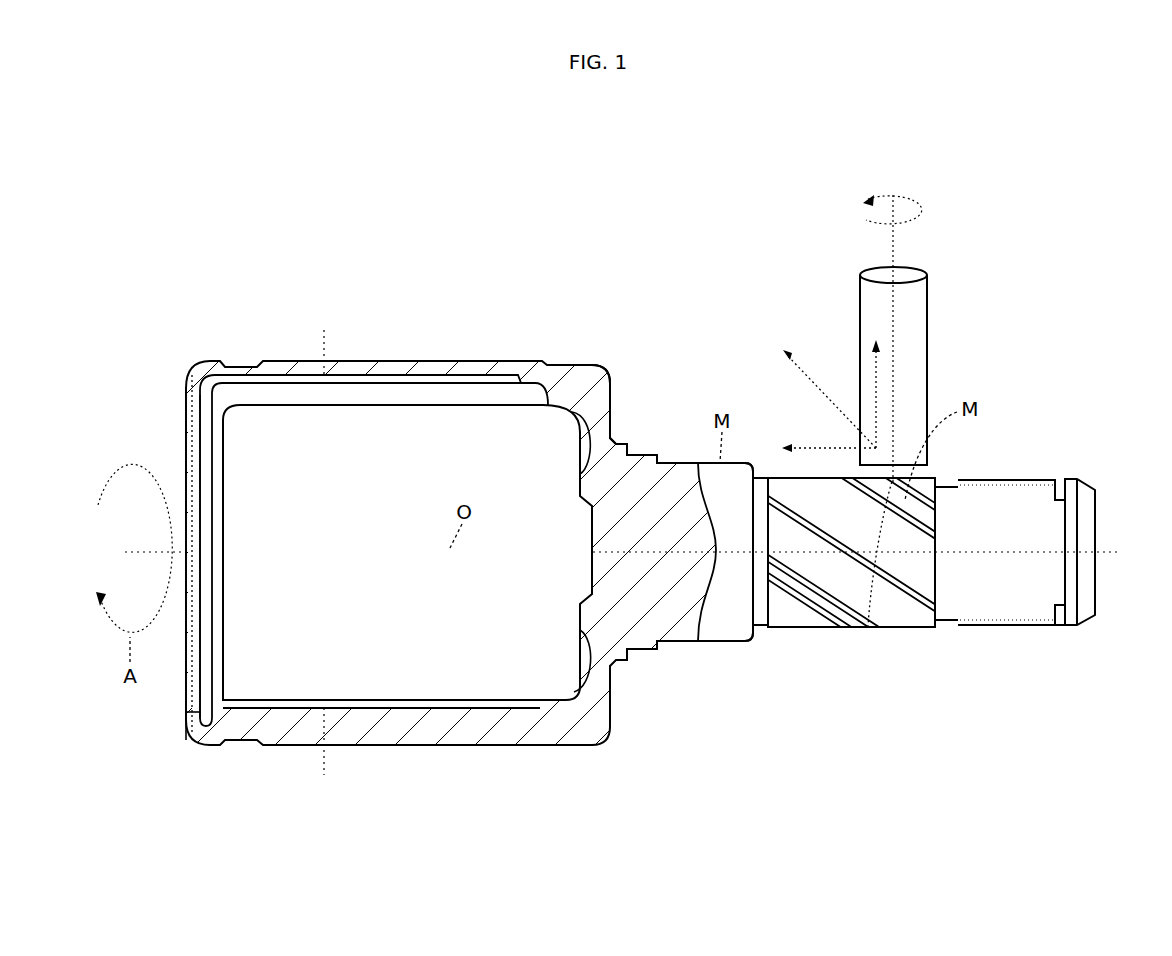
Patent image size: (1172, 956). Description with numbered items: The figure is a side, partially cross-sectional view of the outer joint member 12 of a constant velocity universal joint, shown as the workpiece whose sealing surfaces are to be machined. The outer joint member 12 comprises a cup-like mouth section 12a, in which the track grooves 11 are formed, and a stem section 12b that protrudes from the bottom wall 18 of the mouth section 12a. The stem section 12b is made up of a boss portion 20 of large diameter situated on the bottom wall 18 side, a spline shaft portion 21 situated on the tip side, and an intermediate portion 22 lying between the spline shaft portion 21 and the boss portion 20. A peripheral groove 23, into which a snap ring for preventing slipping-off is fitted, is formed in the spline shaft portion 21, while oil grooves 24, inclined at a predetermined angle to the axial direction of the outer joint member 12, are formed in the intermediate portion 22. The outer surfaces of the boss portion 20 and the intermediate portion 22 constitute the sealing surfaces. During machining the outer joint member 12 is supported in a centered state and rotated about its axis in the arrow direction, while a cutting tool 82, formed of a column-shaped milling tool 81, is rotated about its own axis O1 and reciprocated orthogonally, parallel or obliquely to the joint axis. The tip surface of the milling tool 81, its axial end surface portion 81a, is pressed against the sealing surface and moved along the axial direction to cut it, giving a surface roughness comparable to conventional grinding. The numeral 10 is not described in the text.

The constant velocity joint 10 is at (408, 700).
The track grooves 11 is at (412, 382).
The outer joint member 12 is at (487, 748).
The mouth section 12a is at (300, 746).
The stem section 12b is at (903, 613).
The bottom wall 18 is at (612, 410).
The boss portion 20 is at (717, 642).
The spline shaft portion 21 is at (1025, 600).
The intermediate portion 22 is at (882, 575).
The peripheral groove 23 is at (1066, 523).
The oil grooves 24 is at (913, 510).
The milling tool 81 is at (918, 325).
The axial end surface portion 81a is at (868, 627).
The cutting tool 82 is at (848, 298).
The axis of the milling tool O1 is at (895, 233).